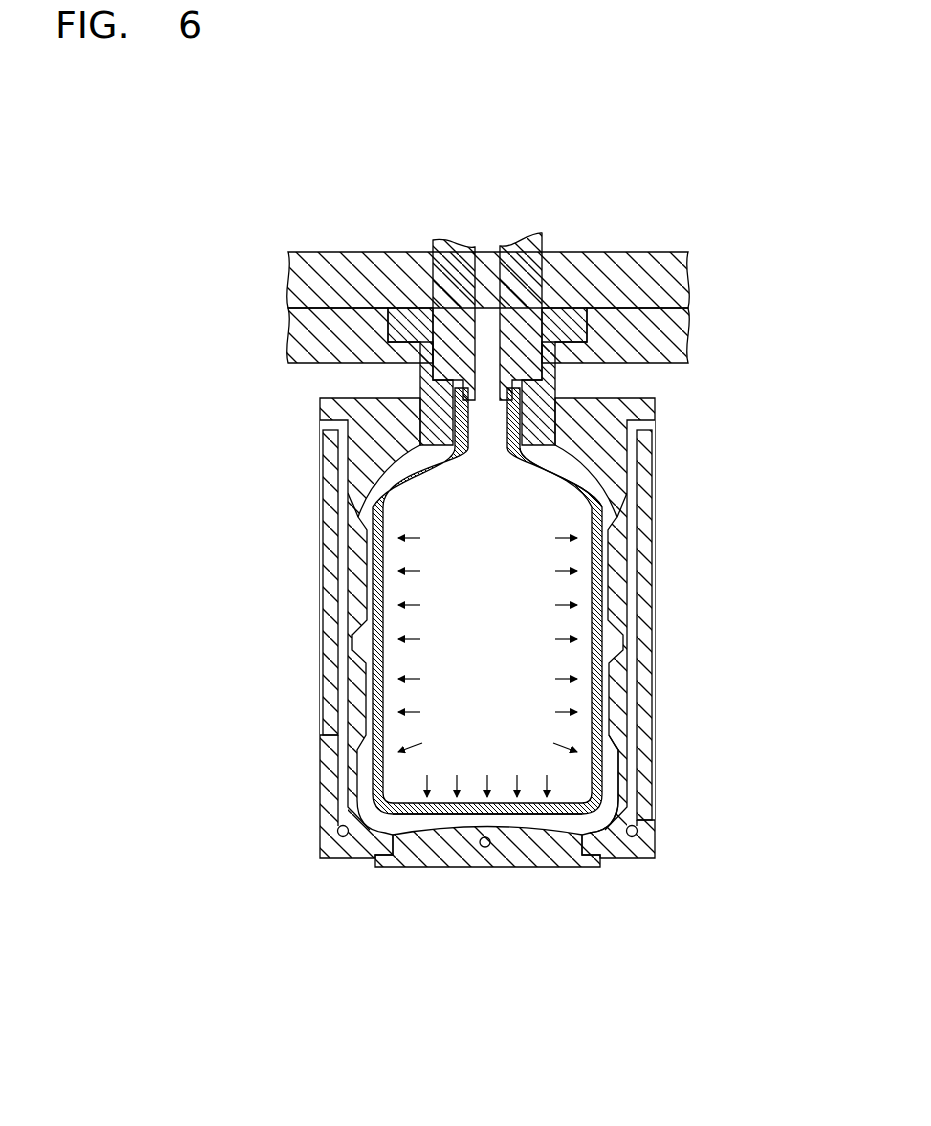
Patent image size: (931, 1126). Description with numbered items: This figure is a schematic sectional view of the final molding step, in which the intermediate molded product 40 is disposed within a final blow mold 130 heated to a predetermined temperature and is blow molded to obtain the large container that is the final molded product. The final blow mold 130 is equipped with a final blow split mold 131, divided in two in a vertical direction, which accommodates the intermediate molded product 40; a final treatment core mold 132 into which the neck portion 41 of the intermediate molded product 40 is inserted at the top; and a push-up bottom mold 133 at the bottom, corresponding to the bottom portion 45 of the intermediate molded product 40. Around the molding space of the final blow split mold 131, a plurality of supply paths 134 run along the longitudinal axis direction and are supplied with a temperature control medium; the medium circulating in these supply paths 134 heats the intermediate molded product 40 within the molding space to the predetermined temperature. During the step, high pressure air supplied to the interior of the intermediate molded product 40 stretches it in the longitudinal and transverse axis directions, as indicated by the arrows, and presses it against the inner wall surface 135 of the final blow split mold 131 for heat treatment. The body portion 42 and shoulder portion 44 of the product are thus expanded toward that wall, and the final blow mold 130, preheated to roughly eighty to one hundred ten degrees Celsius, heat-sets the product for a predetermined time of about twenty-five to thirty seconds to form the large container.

The final blow mold 130 is at (670, 162).
The final blow split mold 131 is at (697, 530).
The final treatment core mold 132 is at (538, 384).
The push-up bottom mold 133 is at (523, 848).
The supply paths 134 is at (340, 558).
The inner wall surface 135 is at (604, 785).
The intermediate molded product 40 is at (590, 668).
The neck portion 41 is at (445, 384).
The body portion 42 is at (595, 653).
The shoulder portion 44 is at (582, 490).
The bottom portion 45 is at (452, 803).